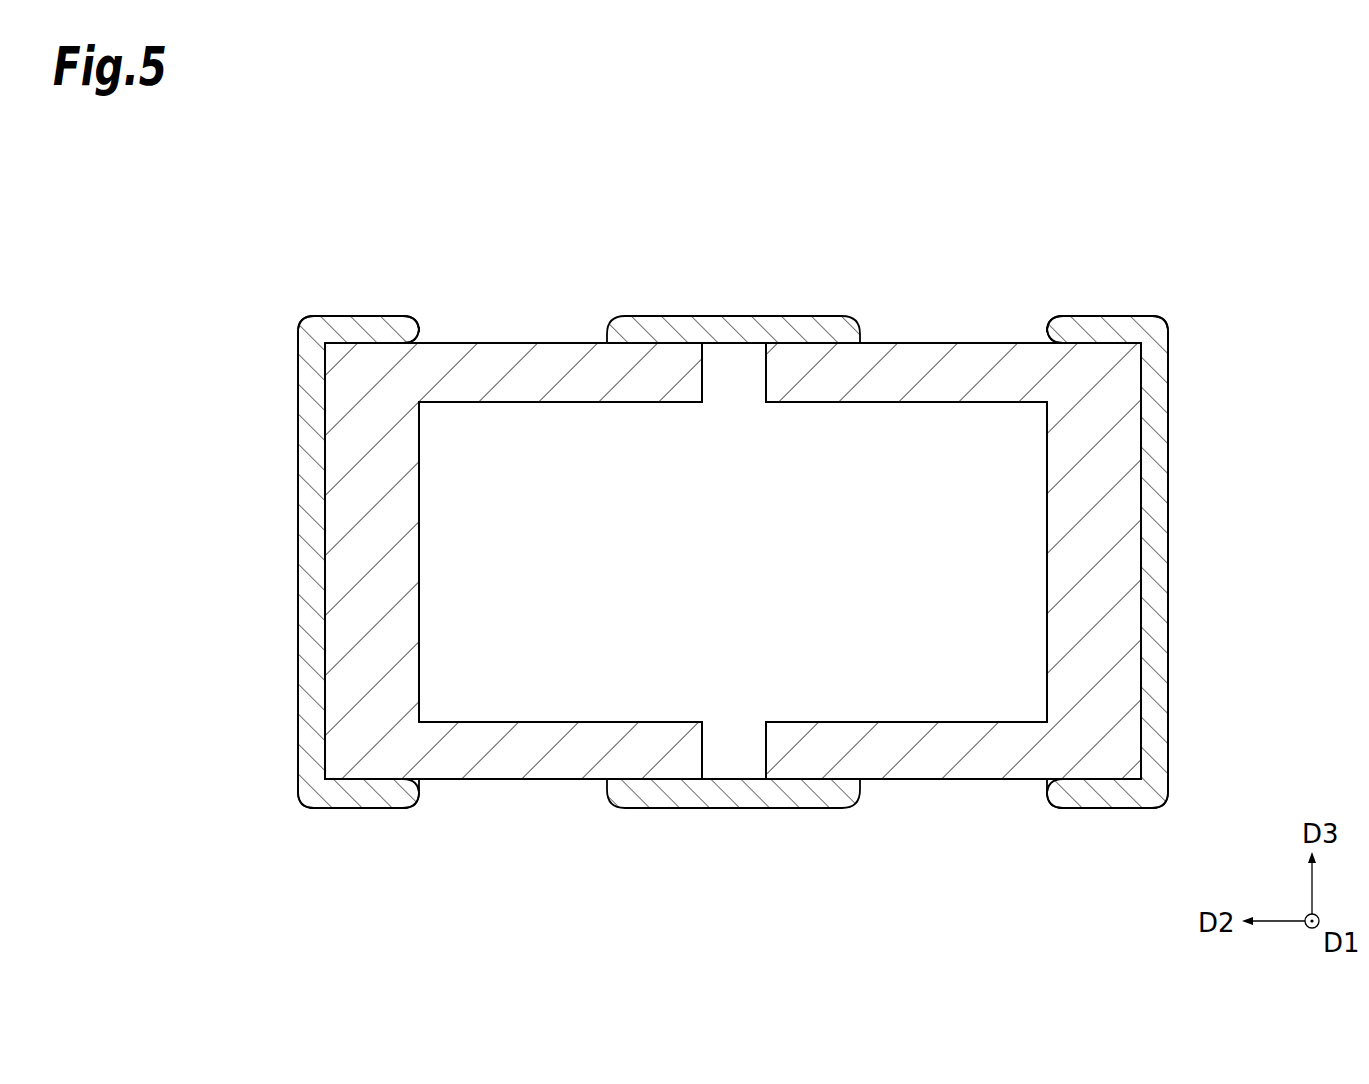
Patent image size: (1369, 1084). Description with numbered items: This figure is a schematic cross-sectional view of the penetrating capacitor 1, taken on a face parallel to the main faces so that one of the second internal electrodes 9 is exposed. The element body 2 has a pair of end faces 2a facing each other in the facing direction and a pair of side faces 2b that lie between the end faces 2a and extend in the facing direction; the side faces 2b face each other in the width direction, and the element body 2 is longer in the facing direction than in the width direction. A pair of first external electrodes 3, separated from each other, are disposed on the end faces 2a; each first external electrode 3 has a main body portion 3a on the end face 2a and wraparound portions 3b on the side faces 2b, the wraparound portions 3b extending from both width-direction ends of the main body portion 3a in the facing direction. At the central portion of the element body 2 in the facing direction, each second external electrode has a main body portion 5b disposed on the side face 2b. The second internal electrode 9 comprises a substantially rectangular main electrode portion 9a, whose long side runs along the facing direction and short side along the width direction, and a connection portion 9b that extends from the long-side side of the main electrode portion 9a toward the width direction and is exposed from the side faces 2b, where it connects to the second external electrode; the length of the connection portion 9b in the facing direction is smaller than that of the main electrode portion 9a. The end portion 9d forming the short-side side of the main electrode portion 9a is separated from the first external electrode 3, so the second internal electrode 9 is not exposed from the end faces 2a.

The penetrating capacitor 1 is at (784, 192).
The element body 2 is at (562, 340).
The end face 2a is at (325, 480).
The side face 2b is at (930, 343).
The first external electrode 3 is at (286, 659).
The main body portion 3a is at (298, 432).
The wraparound portion 3b is at (367, 316).
The main body portion 5b is at (683, 316).
The second internal electrode 9 is at (565, 722).
The main electrode portion 9a is at (946, 567).
The connection portion 9b is at (735, 376).
The end portion 9d is at (418, 558).